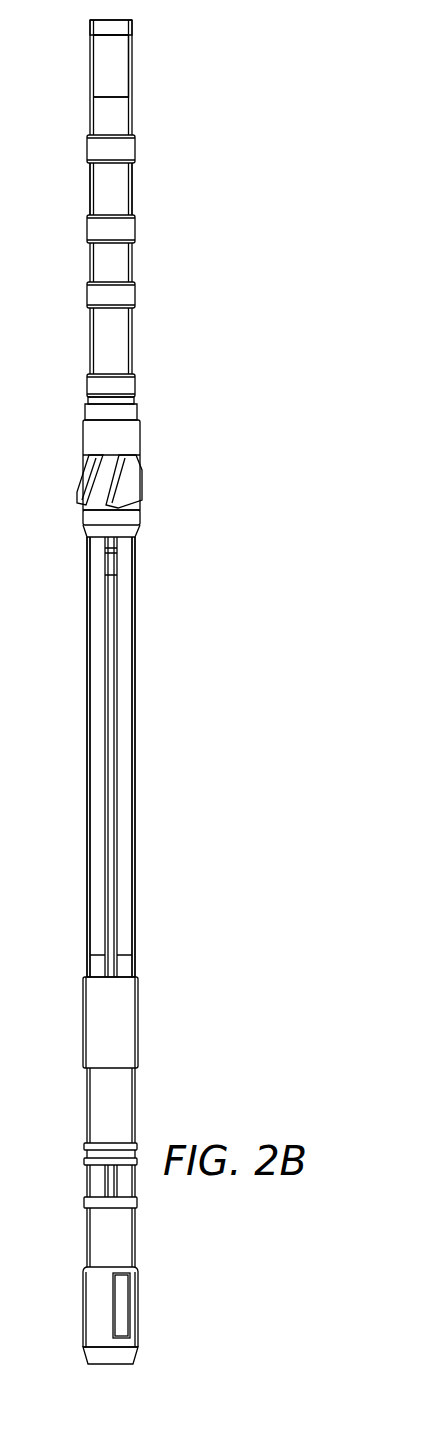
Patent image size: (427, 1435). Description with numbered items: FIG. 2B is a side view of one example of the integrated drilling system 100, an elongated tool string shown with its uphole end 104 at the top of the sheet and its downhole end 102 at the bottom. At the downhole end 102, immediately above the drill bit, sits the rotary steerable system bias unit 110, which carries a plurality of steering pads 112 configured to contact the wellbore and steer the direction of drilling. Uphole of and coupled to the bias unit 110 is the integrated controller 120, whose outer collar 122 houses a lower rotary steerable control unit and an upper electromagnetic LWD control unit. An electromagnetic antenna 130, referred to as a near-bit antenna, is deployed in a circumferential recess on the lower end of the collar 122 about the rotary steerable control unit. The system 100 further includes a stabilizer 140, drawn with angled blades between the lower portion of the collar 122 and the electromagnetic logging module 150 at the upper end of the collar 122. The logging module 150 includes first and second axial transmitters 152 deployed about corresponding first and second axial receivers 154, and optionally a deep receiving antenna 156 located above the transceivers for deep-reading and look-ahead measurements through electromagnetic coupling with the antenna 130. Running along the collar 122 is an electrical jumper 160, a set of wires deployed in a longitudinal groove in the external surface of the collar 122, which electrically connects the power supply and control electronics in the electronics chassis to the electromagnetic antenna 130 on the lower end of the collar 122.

The integrated system 100 is at (250, 177).
The downhole end 102 is at (120, 1364).
The uphole end 104 is at (130, 22).
The rotary steerable system bias unit 110 is at (138, 1276).
The steering pads 112 is at (120, 1320).
The integrated controller 120 is at (137, 859).
The outer collar 122 is at (90, 182).
The electromagnetic antenna 130 is at (140, 1020).
The stabilizer 140 is at (140, 447).
The electromagnetic logging module 150 is at (134, 337).
The axial transmitters 152 is at (135, 148).
The axial receivers 154 is at (135, 229).
The deep receiving antenna 156 is at (133, 73).
The electrical jumper 160 is at (115, 772).